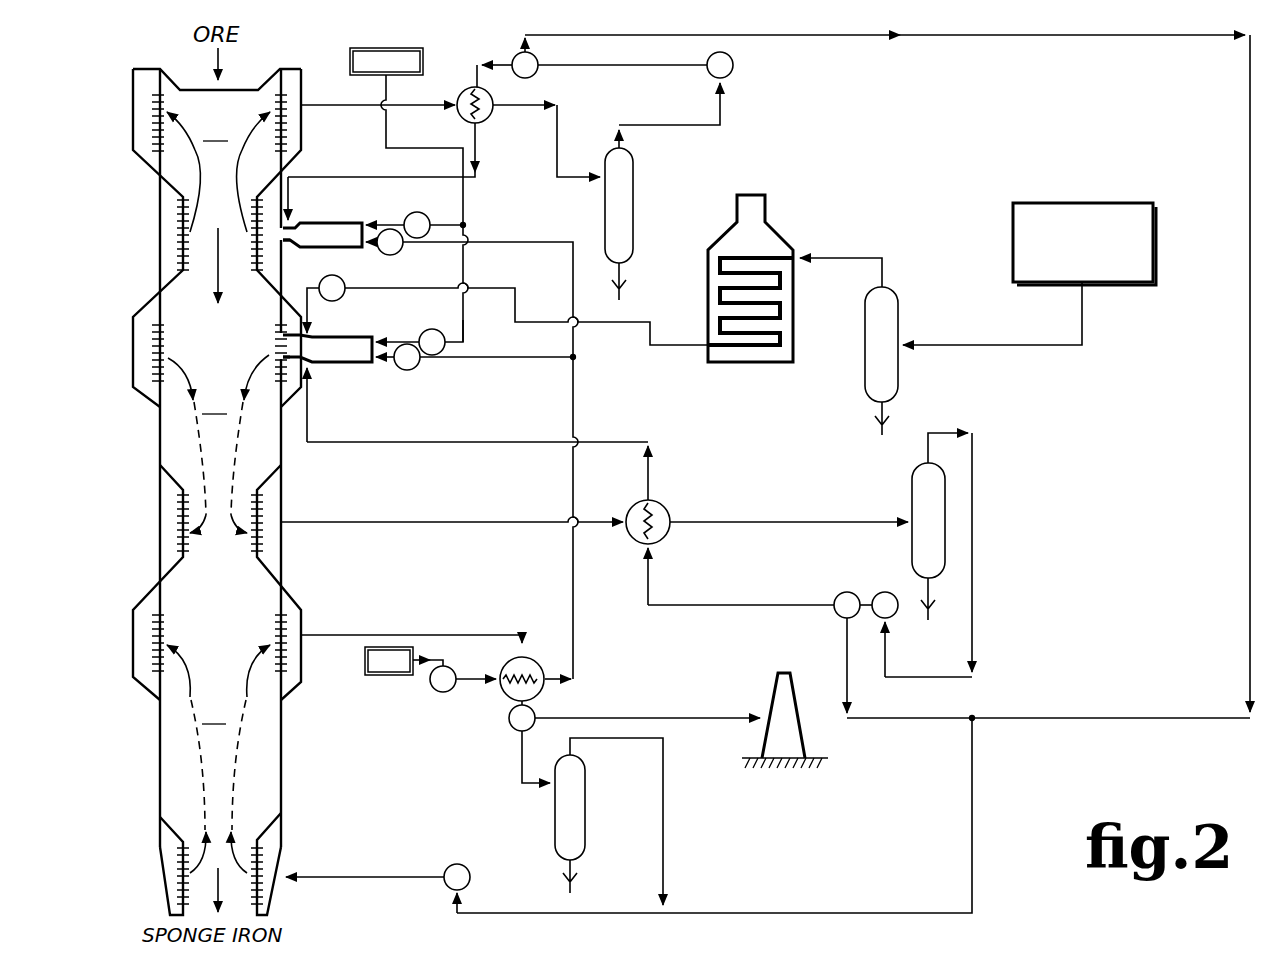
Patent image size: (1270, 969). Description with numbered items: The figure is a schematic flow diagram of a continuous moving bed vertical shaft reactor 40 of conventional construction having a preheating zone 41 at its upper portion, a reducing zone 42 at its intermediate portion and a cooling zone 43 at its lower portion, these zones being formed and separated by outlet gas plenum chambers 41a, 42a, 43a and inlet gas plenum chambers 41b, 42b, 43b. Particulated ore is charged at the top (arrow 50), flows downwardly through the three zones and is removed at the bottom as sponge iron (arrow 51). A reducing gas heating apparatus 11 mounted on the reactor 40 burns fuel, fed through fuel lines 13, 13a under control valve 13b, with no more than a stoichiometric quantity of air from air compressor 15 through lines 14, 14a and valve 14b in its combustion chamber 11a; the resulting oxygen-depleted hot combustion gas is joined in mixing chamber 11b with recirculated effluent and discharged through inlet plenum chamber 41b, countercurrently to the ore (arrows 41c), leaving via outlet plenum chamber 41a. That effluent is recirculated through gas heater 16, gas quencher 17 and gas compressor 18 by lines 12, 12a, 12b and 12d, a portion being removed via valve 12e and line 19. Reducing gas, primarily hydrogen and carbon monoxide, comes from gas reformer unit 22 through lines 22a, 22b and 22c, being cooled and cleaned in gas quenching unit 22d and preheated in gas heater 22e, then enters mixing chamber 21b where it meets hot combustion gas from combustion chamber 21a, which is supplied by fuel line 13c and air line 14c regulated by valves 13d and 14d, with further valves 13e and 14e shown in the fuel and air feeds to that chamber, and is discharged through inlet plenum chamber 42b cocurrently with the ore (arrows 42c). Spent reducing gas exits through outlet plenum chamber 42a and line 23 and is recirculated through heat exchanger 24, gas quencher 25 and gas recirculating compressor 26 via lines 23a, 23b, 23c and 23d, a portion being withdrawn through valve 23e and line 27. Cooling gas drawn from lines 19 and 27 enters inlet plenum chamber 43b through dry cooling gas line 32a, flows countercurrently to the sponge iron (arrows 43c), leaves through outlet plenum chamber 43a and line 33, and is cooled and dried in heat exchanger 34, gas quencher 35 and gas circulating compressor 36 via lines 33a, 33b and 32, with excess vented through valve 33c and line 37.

The reducing gas heating apparatus 11 is at (333, 228).
The combustion chamber 11a is at (333, 222).
The mixing chamber 11b is at (290, 247).
The preheating gas recirculation line 12 is at (360, 105).
The preheating gas recirculation line 12a is at (557, 150).
The preheating gas recirculation line 12b is at (722, 113).
The preheating gas recirculation line 12d is at (365, 177).
The valve 12e is at (531, 75).
The fuel line 13 is at (400, 48).
The fuel line 13a is at (465, 206).
The control valve 13b is at (463, 227).
The fuel line 13c is at (420, 212).
The valve 13d is at (463, 342).
The fuel valve 13e is at (432, 329).
The oxygen-containing gas line 14 is at (400, 677).
The oxygen-containing gas line 14a is at (573, 472).
The control valve 14b is at (543, 243).
The air line 14c is at (398, 256).
The valve 14d is at (447, 358).
The air valve 14e is at (420, 369).
The air compressor 15 is at (447, 693).
The gas heater 16 is at (462, 95).
The gas quencher 17 is at (636, 210).
The gas compressor 18 is at (735, 68).
The line 19 is at (835, 37).
The combustion chamber 21a is at (367, 337).
The mixing chamber 21b is at (318, 365).
The gas reformer unit 22 is at (1100, 203).
The reducing gas line 22a is at (950, 347).
The reducing gas line 22b is at (845, 258).
The reducing gas line 22c is at (677, 350).
The gas quenching unit 22d is at (865, 392).
The gas heater 22e is at (708, 286).
The reducing gas effluent line 23 is at (425, 522).
The reducing gas circuit line 23a is at (800, 522).
The reducing gas circuit line 23b is at (975, 557).
The reducing gas circuit line 23c is at (740, 605).
The reducing gas circuit line 23d is at (437, 442).
The valve 23e is at (847, 592).
The heat exchanger 24 is at (668, 511).
The gas quencher 25 is at (912, 497).
The gas recirculating compressor 26 is at (890, 592).
The line 27 is at (847, 658).
The cooling gas circuit line 32 is at (790, 912).
The dry cooling gas line 32a is at (340, 877).
The cooling gas effluent line 33 is at (440, 635).
The cooling gas circuit line 33a is at (522, 770).
The cooling gas circuit line 33b is at (664, 843).
The valve 33c is at (515, 728).
The heat exchanger 34 is at (512, 695).
The gas quencher 35 is at (556, 828).
The gas circulating compressor 36 is at (468, 868).
The vent line 37 is at (620, 718).
The vertical reactor shaft 40 is at (108, 136).
The preheating zone 41 is at (182, 192).
The outlet gas plenum chamber 41a is at (133, 97).
The inlet gas plenum chamber 41b is at (172, 236).
The arrows 41c is at (195, 170).
The reducing zone 42 is at (184, 438).
The outlet gas plenum chamber 42a is at (167, 523).
The inlet gas plenum chamber 42b is at (152, 340).
The arrows 42c is at (198, 440).
The cooling zone 43 is at (182, 759).
The outlet gas plenum chamber 43a is at (152, 632).
The inlet gas plenum chamber 43b is at (170, 862).
The arrows 43c is at (197, 767).
The arrow 50 is at (215, 62).
The arrow 51 is at (218, 895).